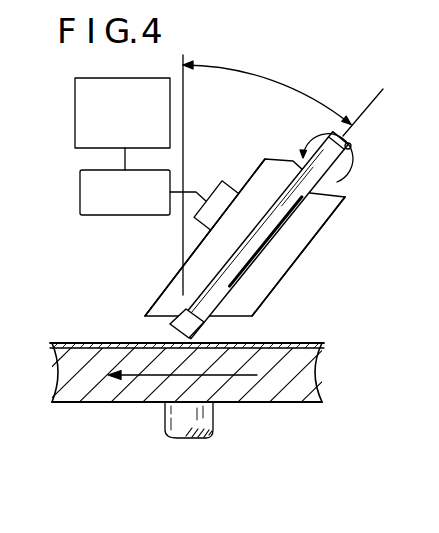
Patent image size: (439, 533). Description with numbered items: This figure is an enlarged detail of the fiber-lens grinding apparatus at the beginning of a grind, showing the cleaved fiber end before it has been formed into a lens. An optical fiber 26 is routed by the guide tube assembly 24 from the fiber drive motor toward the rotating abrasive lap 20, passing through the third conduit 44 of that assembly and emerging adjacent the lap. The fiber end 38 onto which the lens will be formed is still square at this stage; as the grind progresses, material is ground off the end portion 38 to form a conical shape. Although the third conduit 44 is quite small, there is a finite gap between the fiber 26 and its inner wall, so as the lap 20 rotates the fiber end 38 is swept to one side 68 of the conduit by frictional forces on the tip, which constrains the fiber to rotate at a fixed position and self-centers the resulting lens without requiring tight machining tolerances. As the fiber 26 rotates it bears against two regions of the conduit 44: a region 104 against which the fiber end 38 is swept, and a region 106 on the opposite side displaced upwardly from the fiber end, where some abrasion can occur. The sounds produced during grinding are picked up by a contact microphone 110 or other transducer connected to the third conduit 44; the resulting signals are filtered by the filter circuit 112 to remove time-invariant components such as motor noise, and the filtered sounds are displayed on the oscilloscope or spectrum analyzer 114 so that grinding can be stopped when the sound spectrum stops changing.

The oscilloscope or spectrum analyzer 114 is at (104, 78).
The filter circuit 112 is at (108, 215).
The contact microphone 110 is at (216, 183).
The region 106 is at (274, 228).
The optical fiber 26 is at (352, 153).
The guide tube assembly 24 is at (305, 264).
The third conduit 44 is at (285, 268).
The fiber end 38 is at (160, 280).
The side of the conduit 68 is at (136, 302).
The rotating abrasive lap 20 is at (107, 342).
The region 104 is at (190, 318).